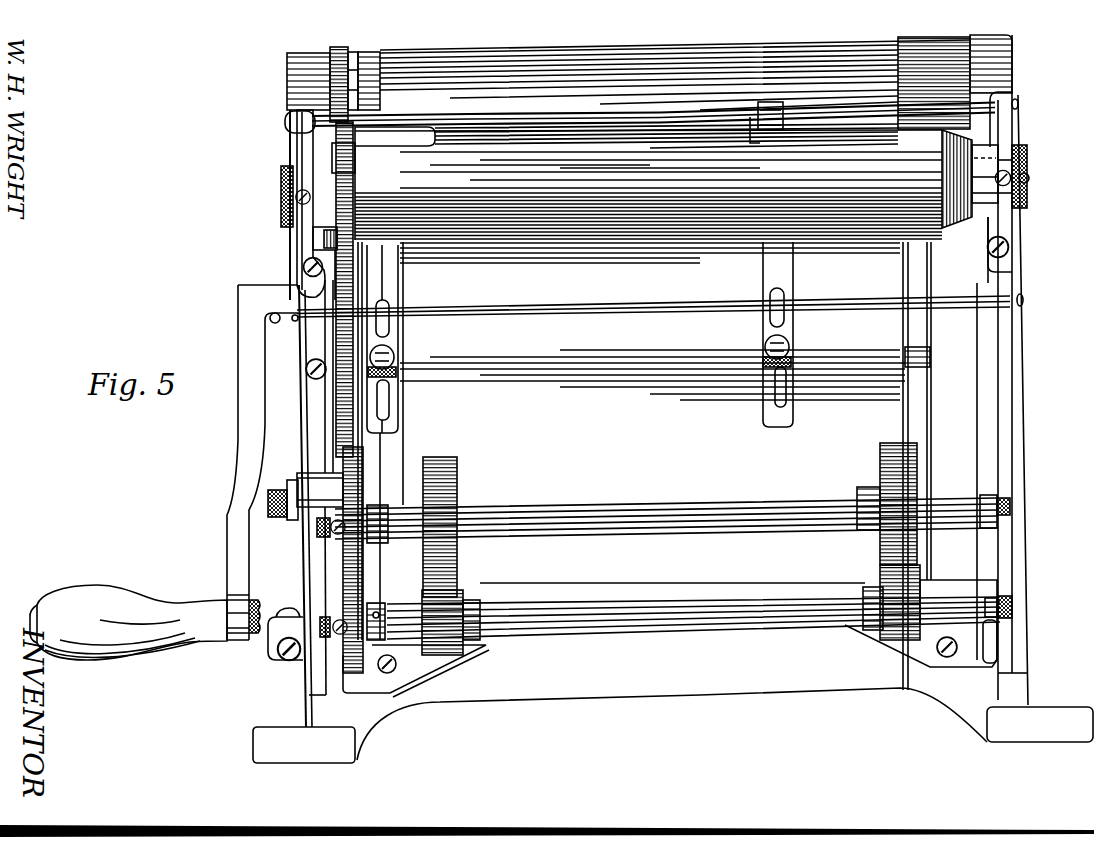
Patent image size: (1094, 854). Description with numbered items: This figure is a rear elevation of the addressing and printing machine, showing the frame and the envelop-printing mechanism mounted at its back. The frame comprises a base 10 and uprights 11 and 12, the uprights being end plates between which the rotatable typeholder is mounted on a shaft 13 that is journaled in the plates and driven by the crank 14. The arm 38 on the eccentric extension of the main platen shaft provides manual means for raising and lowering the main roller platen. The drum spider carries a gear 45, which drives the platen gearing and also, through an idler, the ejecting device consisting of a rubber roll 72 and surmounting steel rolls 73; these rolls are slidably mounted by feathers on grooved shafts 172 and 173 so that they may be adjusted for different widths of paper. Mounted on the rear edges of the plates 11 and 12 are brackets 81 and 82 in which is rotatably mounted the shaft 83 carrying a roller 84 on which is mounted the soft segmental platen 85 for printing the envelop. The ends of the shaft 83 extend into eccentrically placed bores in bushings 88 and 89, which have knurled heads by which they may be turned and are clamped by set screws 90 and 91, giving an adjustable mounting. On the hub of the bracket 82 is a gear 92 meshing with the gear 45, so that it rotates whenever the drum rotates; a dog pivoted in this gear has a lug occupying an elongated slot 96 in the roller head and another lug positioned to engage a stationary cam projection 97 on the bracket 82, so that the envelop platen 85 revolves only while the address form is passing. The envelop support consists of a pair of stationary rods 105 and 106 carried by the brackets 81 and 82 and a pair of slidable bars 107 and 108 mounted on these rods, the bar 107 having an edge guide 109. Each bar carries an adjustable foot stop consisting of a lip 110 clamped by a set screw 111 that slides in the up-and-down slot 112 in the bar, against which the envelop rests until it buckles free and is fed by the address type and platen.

The base 10 is at (673, 502).
The upright 11 is at (1003, 83).
The upright 12 is at (297, 97).
The shaft 13 is at (457, 495).
The crank 14 is at (250, 448).
The arm 38 is at (286, 614).
The gear 45 is at (352, 40).
The rubber roll 72 is at (453, 610).
The steel rolls 73 is at (893, 530).
The bracket 81 is at (1010, 258).
The bracket 82 is at (300, 240).
The shaft 83 is at (1026, 173).
The roller 84 is at (830, 148).
The segmental platen 85 is at (540, 127).
The bushing 88 is at (282, 168).
The bushing 89 is at (1027, 155).
The set screw 90 is at (296, 206).
The set screw 91 is at (1025, 198).
The gear 92 is at (355, 153).
The slot 96 is at (355, 177).
The cam projection 97 is at (313, 255).
The rod 105 is at (685, 110).
The rod 106 is at (717, 297).
The slidable bar 107 is at (373, 282).
The slidable bar 108 is at (775, 270).
The edge guide 109 is at (395, 136).
The lip 110 is at (388, 330).
The set screw 111 is at (394, 358).
The slot 112 is at (389, 402).
The shaft 172 is at (713, 605).
The shaft 173 is at (648, 500).